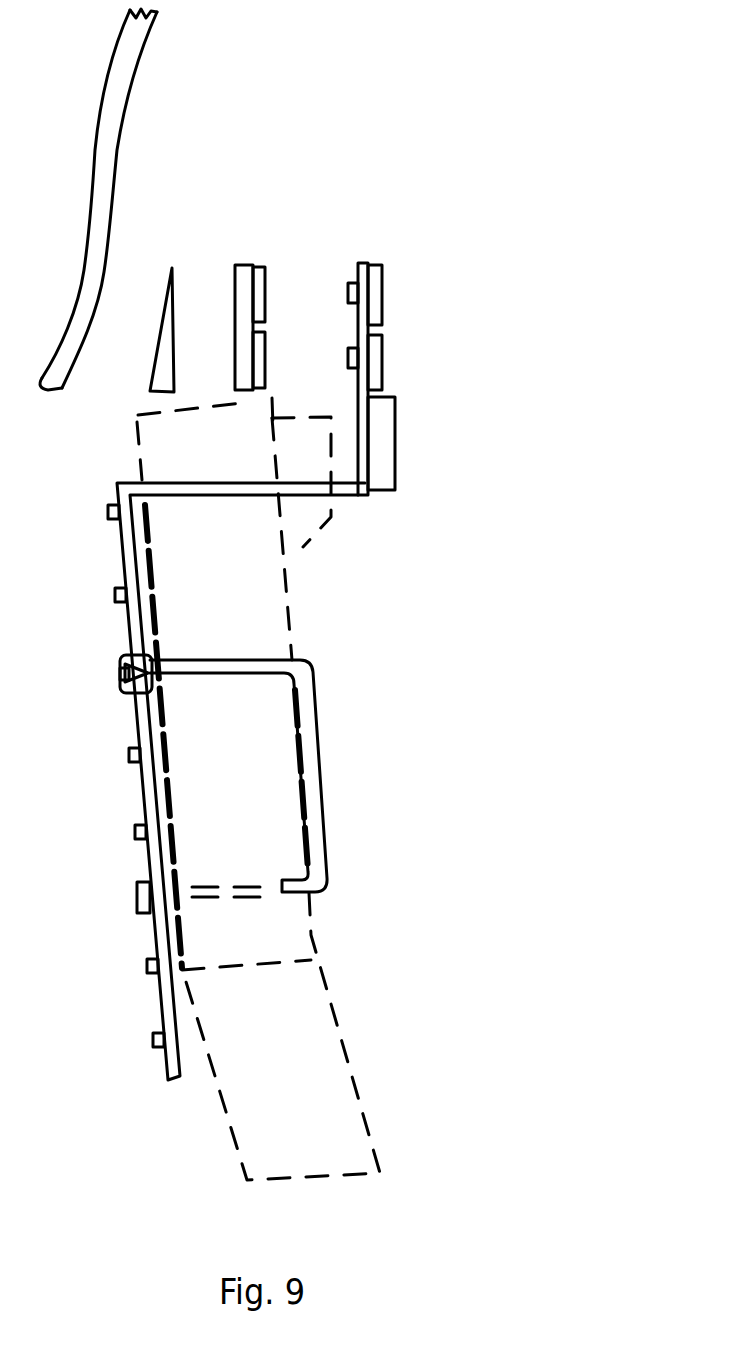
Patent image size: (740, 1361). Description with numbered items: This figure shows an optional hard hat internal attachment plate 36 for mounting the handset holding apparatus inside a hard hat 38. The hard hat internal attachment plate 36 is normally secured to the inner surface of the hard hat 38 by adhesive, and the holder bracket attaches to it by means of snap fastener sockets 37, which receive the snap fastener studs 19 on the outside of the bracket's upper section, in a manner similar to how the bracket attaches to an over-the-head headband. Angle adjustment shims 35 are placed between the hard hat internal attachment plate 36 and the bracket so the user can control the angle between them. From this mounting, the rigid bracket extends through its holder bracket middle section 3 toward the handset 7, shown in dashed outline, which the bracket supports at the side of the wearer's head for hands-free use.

The holder bracket middle section 3 is at (348, 492).
The handset 7 is at (310, 1030).
The snap fastener studs 19 is at (352, 287).
The angle adjustment shims 35 is at (153, 372).
The hard hat internal attachment plate 36 is at (247, 278).
The snap fastener sockets 37 is at (266, 283).
The hard hat 38 is at (122, 106).